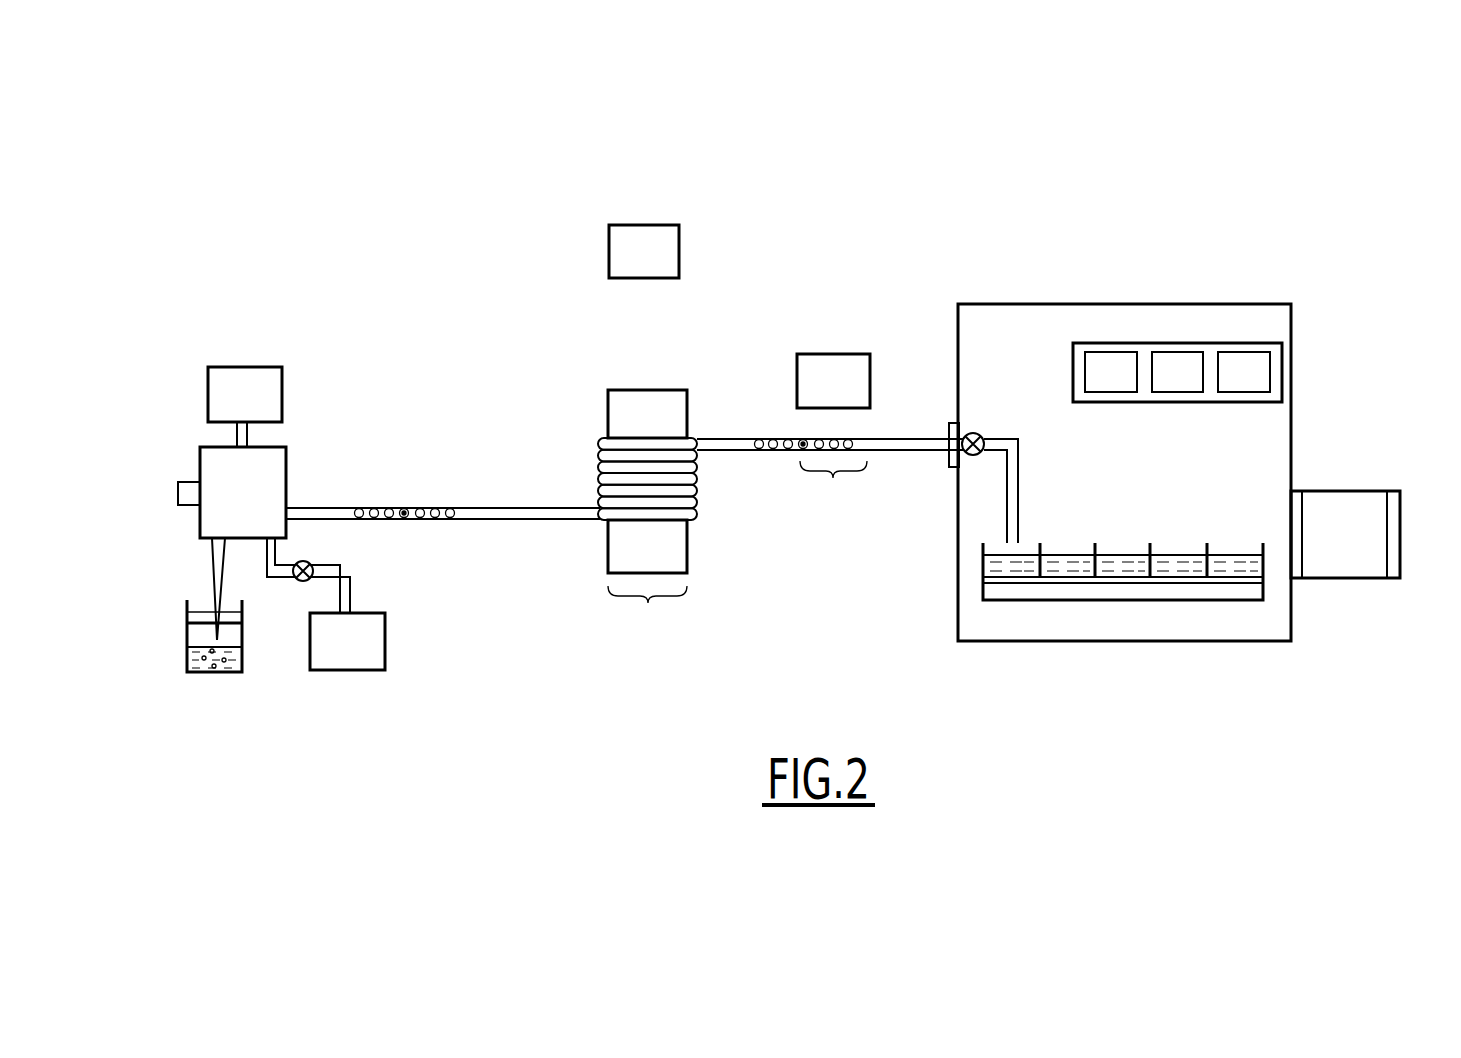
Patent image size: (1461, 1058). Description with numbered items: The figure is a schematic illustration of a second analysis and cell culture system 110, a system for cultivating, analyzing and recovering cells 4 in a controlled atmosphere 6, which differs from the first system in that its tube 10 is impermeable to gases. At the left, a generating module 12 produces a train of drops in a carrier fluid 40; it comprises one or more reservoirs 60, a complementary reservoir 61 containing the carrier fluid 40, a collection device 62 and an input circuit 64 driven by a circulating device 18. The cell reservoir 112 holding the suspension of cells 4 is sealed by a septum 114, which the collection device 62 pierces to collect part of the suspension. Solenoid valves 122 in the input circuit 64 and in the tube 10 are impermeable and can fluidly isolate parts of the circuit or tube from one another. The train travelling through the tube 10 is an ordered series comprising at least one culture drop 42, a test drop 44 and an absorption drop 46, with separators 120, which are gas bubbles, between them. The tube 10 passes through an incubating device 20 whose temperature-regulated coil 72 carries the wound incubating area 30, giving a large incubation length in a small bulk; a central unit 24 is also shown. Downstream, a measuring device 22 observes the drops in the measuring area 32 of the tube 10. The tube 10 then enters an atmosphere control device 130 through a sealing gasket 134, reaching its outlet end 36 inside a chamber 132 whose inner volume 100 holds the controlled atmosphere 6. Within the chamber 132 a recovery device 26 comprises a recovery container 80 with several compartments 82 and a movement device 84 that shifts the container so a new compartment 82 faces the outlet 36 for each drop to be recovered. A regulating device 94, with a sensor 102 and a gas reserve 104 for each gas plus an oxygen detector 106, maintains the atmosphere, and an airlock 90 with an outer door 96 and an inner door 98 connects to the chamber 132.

The second analysis and cell culture system 110 is at (322, 253).
The generating module 12 is at (158, 375).
The circulating device 18 is at (258, 407).
The input circuit 64 is at (256, 505).
The complementary reservoir 61 is at (178, 492).
The collection device 62 is at (212, 557).
The carrier fluid 40 is at (558, 507).
The tube 10 is at (529, 495).
The separator 120 is at (357, 509).
The absorption drop 46 is at (372, 509).
The test drop 44 is at (388, 509).
The culture drop 42 is at (405, 509).
The cells 4 is at (404, 520).
The solenoid valve 122 is at (310, 563).
The reservoir 60 is at (360, 657).
The controlled atmosphere 6 is at (215, 632).
The septum 114 is at (222, 618).
The cell reservoir 112 is at (232, 664).
The incubating device 20 is at (632, 421).
The coil 72 is at (626, 398).
The incubating area 30 is at (647, 577).
The central unit 24 is at (657, 266).
The measuring device 22 is at (846, 396).
The measuring area 32 is at (830, 473).
The sealing gasket 134 is at (946, 460).
The outlet end 36 is at (1005, 527).
The atmosphere control device 130 is at (1177, 285).
The chamber 132 is at (1219, 641).
The inner volume 100 is at (1030, 361).
The regulating device 94 is at (1177, 393).
The oxygen detector 106 is at (1128, 387).
The gas reserve 104 is at (1195, 387).
The sensor 102 is at (1261, 387).
The recovery device 26 is at (1060, 525).
The recovery container 80 is at (1253, 532).
The compartments 82 is at (1230, 567).
The movement device 84 is at (1025, 592).
The airlock 90 is at (1361, 590).
The outer door 96 is at (1296, 503).
The inner door 98 is at (1400, 546).